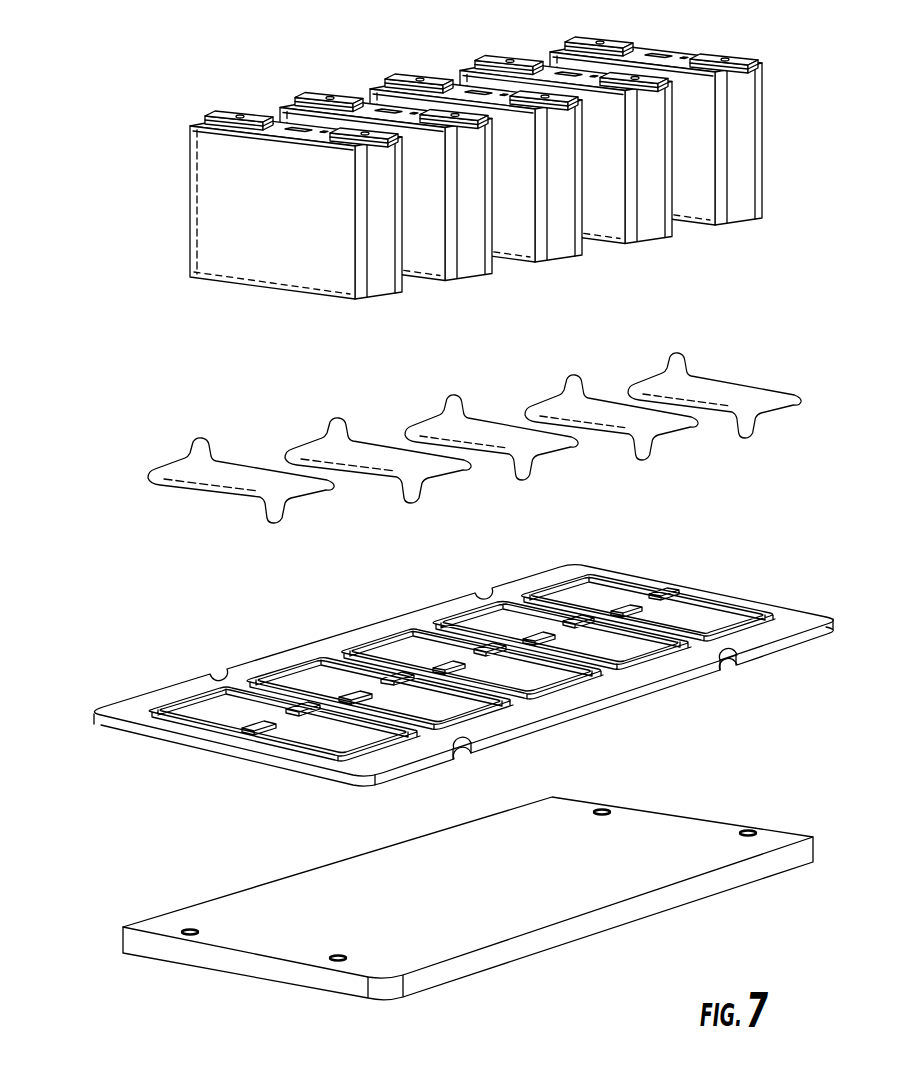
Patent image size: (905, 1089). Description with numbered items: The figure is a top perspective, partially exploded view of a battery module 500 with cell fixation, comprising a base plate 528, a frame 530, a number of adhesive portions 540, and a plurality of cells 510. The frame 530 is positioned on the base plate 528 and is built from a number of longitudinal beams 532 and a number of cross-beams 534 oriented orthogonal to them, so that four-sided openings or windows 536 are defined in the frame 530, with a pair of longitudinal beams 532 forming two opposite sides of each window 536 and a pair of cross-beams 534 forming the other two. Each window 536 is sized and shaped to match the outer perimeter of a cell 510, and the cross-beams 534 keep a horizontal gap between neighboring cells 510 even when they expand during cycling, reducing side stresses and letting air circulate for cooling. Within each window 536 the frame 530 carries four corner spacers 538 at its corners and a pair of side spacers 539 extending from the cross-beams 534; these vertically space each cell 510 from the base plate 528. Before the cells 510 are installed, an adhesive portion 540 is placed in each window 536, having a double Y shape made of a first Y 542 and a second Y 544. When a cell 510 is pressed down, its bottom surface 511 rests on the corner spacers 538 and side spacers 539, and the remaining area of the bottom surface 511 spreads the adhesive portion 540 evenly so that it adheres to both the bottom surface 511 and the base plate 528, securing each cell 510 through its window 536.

The battery module 500 is at (150, 76).
The cells 510 is at (347, 303).
The bottom surface 511 is at (763, 230).
The base plate 528 is at (147, 923).
The frame 530 is at (446, 665).
The longitudinal beams 532 is at (478, 758).
The cross-beams 534 is at (511, 652).
The windows 536 is at (284, 724).
The corner spacers 538 is at (571, 567).
The side spacers 539 is at (472, 664).
The adhesive portions 540 is at (421, 408).
The first Y 542 is at (149, 476).
The second Y 544 is at (333, 488).